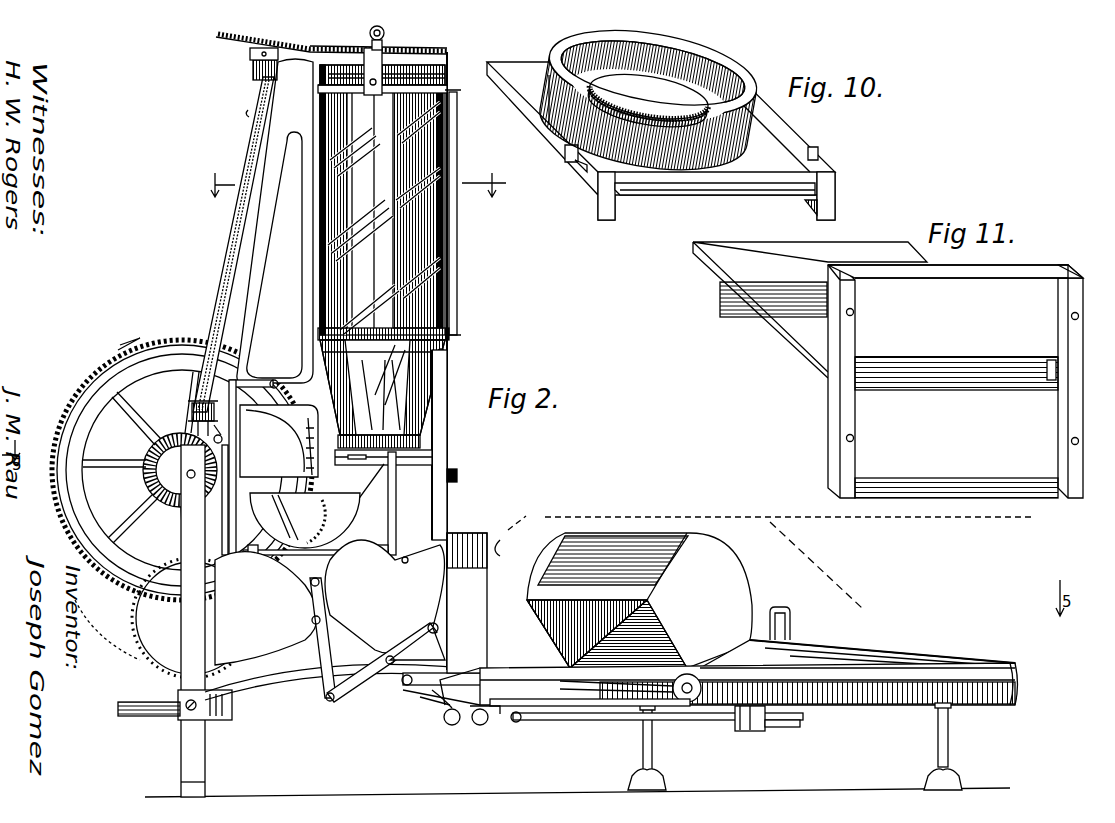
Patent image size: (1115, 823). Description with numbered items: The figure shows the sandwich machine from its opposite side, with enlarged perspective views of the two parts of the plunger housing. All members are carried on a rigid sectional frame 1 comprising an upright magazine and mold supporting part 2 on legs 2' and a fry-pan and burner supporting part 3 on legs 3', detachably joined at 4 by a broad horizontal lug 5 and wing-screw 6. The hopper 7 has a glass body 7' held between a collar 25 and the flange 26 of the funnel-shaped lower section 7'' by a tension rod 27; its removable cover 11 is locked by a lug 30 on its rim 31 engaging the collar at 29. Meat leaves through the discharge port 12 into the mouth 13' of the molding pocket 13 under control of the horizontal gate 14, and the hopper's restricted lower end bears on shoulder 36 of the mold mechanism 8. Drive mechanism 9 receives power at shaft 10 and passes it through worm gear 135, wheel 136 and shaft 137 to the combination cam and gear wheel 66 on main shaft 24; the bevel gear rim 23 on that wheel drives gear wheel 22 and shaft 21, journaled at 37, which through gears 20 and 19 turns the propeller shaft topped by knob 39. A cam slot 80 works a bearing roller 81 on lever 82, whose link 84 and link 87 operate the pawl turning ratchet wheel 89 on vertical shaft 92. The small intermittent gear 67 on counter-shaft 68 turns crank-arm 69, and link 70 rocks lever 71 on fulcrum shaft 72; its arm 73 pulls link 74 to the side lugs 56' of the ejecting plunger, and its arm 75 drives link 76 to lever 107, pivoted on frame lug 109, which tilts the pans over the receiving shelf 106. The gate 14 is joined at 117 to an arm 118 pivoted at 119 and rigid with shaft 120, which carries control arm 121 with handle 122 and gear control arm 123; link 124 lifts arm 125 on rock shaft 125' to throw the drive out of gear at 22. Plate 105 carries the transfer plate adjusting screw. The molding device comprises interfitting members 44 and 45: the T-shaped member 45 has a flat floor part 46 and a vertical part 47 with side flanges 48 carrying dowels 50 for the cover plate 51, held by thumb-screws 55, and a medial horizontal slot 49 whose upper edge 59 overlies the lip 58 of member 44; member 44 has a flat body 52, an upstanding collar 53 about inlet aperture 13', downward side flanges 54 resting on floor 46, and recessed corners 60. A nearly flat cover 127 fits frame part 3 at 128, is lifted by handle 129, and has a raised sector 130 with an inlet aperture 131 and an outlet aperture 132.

In FIG. 2, the frame 1 is at (414, 704).
In FIG. 2, the magazine and mold supporting part 2 is at (275, 221).
In FIG. 2, the legs 2' is at (208, 621).
In FIG. 2, the fry-pan and burner supporting part 3 is at (710, 696).
In FIG. 2, the legs 3' is at (802, 746).
In FIG. 2, the detachable connection 4 is at (444, 710).
In FIG. 2, the broad horizontal lug 5 is at (450, 726).
In FIG. 2, the wing-screw 6 is at (480, 726).
In FIG. 2, the hopper 7 is at (395, 361).
In FIG. 2, the body part 7' is at (469, 212).
In FIG. 2, the lower end section 7'' is at (405, 387).
In FIG. 2, the mold mechanism 8 is at (430, 461).
In FIG. 2, the drive mechanism 9 is at (105, 618).
In FIG. 2, the shaft 10 is at (142, 717).
In FIG. 2, the cover 11 is at (447, 73).
In FIG. 2, the discharge port 12 is at (350, 185).
In FIG. 10, the molding pocket 13 is at (648, 95).
In FIG. 2, the mouth of molding pocket 13' is at (406, 427).
In FIG. 10, the mouth of molding pocket 13' is at (690, 93).
In FIG. 2, the horizontal gate 14 is at (366, 466).
In FIG. 10, the horizontal gate 14 is at (585, 170).
In FIG. 2, the gear 19 is at (446, 56).
In FIG. 2, the gear 20 is at (232, 40).
In FIG. 2, the shaft 21 is at (222, 247).
In FIG. 2, the gear wheel 22 is at (198, 418).
In FIG. 2, the bevel gear rim 23 is at (165, 452).
In FIG. 2, the horizontal main shaft 24 is at (192, 479).
In FIG. 2, the collar 25 is at (448, 91).
In FIG. 2, the flange 26 is at (380, 333).
In FIG. 2, the tension rod 27 is at (459, 285).
In FIG. 2, the interlocking formation 29 is at (381, 92).
In FIG. 2, the lug 30 is at (382, 71).
In FIG. 2, the rim 31 is at (328, 76).
In FIG. 10, the shoulder 36 is at (705, 78).
In FIG. 2, the journal 37 is at (252, 72).
In FIG. 2, the knob 39 is at (386, 34).
In FIG. 10, the mold member 44 is at (808, 140).
In FIG. 11, the T-shaped mold member 45 is at (1083, 287).
In FIG. 11, the flat part 46 is at (722, 270).
In FIG. 11, the vertical part 47 is at (1050, 265).
In FIG. 11, the side flanges 48 is at (833, 455).
In FIG. 11, the slot 49 is at (940, 392).
In FIG. 11, the dowels 50 is at (855, 314).
In FIG. 2, the cover plate 51 is at (456, 533).
In FIG. 10, the flat body part 52 is at (780, 130).
In FIG. 10, the collar 53 is at (553, 56).
In FIG. 10, the side flanges 54 is at (606, 222).
In FIG. 2, the thumb-screws 55 is at (458, 477).
In FIG. 2, the side lugs 56' is at (465, 352).
In FIG. 10, the lip 58 is at (706, 197).
In FIG. 11, the upper edge of slot 59 is at (984, 358).
In FIG. 10, the recessed corners 60 is at (565, 148).
In FIG. 2, the combination cam and gear wheel 66 is at (97, 379).
In FIG. 2, the intermittent gear 67 is at (322, 548).
In FIG. 2, the counter-shaft 68 is at (319, 581).
In FIG. 2, the crank-arm 69 is at (320, 599).
In FIG. 2, the link 70 is at (326, 632).
In FIG. 2, the lever 71 is at (377, 677).
In FIG. 2, the fulcrum shaft 72 is at (389, 655).
In FIG. 2, the secondary arm 73 is at (438, 640).
In FIG. 2, the link 74 is at (440, 394).
In FIG. 2, the secondary arm 75 is at (407, 686).
In FIG. 2, the link 76 is at (459, 674).
In FIG. 2, the cam slot 80 is at (85, 416).
In FIG. 2, the bearing roller 81 is at (310, 465).
In FIG. 2, the lever 82 is at (305, 520).
In FIG. 2, the link 84 is at (281, 681).
In FIG. 2, the link 87 is at (605, 721).
In FIG. 2, the ratchet wheel 89 is at (790, 728).
In FIG. 2, the vertical shaft 92 is at (752, 732).
In FIG. 2, the plate 105 is at (394, 567).
In FIG. 2, the receiving shelf 106 is at (678, 700).
In FIG. 2, the lever 107 is at (492, 708).
In FIG. 2, the frame lug 109 is at (490, 720).
In FIG. 2, the connection 117 is at (365, 496).
In FIG. 2, the arm 118 is at (397, 530).
In FIG. 2, the pivot 119 is at (330, 602).
In FIG. 2, the horizontal shaft 120 is at (315, 560).
In FIG. 2, the control arm 121 is at (230, 480).
In FIG. 2, the handle part 122 is at (218, 447).
In FIG. 2, the gear control arm 123 is at (240, 575).
In FIG. 2, the link 124 is at (246, 470).
In FIG. 2, the arm 125 is at (260, 376).
In FIG. 2, the rock shaft 125' is at (290, 386).
In FIG. 2, the cover 127 is at (858, 642).
In FIG. 2, the cover seat 128 is at (1013, 670).
In FIG. 2, the handle 129 is at (791, 621).
In FIG. 2, the raised sector 130 is at (500, 541).
In FIG. 2, the inlet aperture 131 is at (771, 553).
In FIG. 2, the outlet aperture 132 is at (556, 626).
In FIG. 2, the worm gear 135 is at (178, 706).
In FIG. 2, the wheel 136 is at (148, 645).
In FIG. 2, the shaft 137 is at (183, 620).